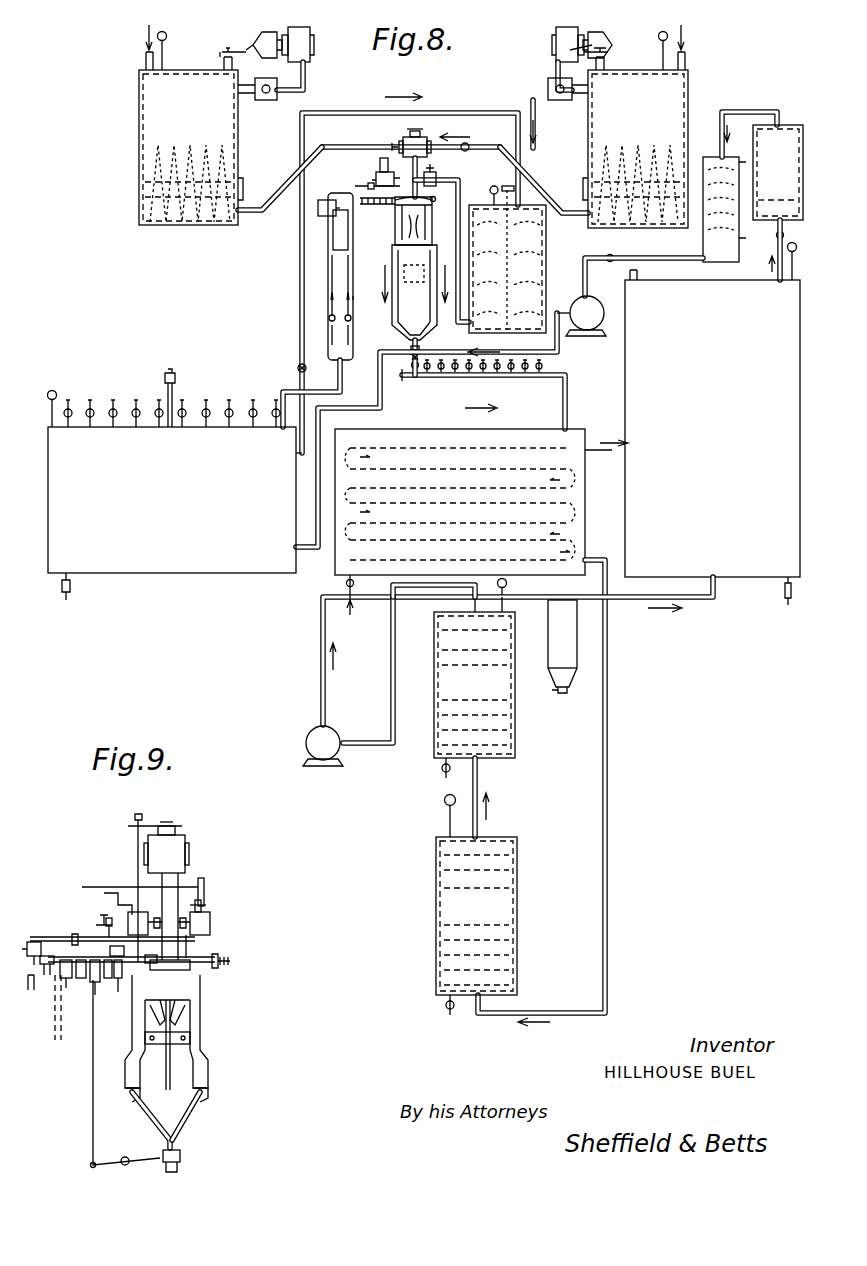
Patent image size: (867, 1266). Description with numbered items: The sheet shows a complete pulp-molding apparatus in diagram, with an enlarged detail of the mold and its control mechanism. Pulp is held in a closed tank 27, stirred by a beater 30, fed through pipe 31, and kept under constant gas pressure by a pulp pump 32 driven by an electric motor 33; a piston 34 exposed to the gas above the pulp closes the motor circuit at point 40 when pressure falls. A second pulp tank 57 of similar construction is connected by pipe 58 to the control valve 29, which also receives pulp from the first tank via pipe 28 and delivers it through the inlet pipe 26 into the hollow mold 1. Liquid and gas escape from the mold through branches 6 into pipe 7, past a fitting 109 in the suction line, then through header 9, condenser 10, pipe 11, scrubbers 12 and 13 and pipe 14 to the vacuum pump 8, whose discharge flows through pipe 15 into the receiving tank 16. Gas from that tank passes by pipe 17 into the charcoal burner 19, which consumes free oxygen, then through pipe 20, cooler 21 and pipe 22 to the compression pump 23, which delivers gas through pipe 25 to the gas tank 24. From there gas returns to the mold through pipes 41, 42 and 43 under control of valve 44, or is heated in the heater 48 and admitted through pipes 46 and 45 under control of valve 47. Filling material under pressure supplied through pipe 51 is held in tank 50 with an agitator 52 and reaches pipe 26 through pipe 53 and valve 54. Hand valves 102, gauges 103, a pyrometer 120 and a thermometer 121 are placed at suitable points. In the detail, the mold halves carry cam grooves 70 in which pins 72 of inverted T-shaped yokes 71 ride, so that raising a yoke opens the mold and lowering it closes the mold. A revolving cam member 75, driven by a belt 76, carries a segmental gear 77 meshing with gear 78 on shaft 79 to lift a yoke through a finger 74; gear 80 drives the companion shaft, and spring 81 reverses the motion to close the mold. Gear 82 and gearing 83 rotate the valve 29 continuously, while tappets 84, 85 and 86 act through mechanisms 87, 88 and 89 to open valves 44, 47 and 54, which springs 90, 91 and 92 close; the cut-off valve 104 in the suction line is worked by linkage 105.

In FIG. 8, the hollow mold 1 is at (425, 228).
In FIG. 8, the branches of the pipe 6 is at (395, 312).
In FIG. 9, the branches of the pipe 6 is at (125, 1092).
In FIG. 8, the pipe 7 is at (420, 350).
In FIG. 8, the vacuum pump 8 is at (305, 740).
In FIG. 8, the header 9 is at (528, 378).
In FIG. 8, the condenser 10 is at (585, 478).
In FIG. 8, the pipe 11 is at (611, 830).
In FIG. 8, the scrubber 12 is at (517, 888).
In FIG. 8, the scrubber 13 is at (515, 727).
In FIG. 8, the pipe 14 is at (398, 720).
In FIG. 8, the pipe 15 is at (527, 603).
In FIG. 8, the receiving tank 16 is at (740, 580).
In FIG. 8, the pipe 17 is at (788, 250).
In FIG. 8, the burner 19 is at (796, 122).
In FIG. 8, the pipe 20 is at (742, 110).
In FIG. 8, the cooler 21 is at (703, 250).
In FIG. 8, the pipe 22 is at (650, 256).
In FIG. 8, the compression pump 23 is at (600, 338).
In FIG. 8, the gas tank 24 is at (220, 575).
In FIG. 8, the pipe 25 is at (380, 408).
In FIG. 8, the pipe 26 is at (440, 165).
In FIG. 8, the closed tank 27 is at (588, 133).
In FIG. 8, the pipe 28 is at (483, 147).
In FIG. 8, the control valve 29 is at (424, 146).
In FIG. 9, the control valve 29 is at (172, 851).
In FIG. 8, the beater or stirrer 30 is at (670, 150).
In FIG. 8, the pipe 31 is at (146, 60).
In FIG. 8, the pulp and material pump 32 is at (300, 27).
In FIG. 8, the electric motor 33 is at (268, 30).
In FIG. 8, the piston 34 is at (222, 59).
In FIG. 8, the contact point 40 is at (249, 48).
In FIG. 8, the pipe 41 is at (310, 392).
In FIG. 8, the pipe 42 is at (302, 252).
In FIG. 9, the pipe 42 is at (122, 893).
In FIG. 8, the pipe 43 is at (394, 146).
In FIG. 8, the valve 44 is at (376, 176).
In FIG. 9, the valve 44 is at (145, 914).
In FIG. 8, the pipe 45 is at (398, 203).
In FIG. 8, the pipe 46 is at (353, 298).
In FIG. 8, the valve 47 is at (318, 208).
In FIG. 9, the valve 47 is at (31, 981).
In FIG. 8, the heater 48 is at (353, 232).
In FIG. 8, the tank 50 is at (546, 265).
In FIG. 8, the pipe 51 is at (538, 150).
In FIG. 8, the agitator 52 is at (511, 179).
In FIG. 8, the pipe 53 is at (443, 199).
In FIG. 8, the valve 54 is at (437, 180).
In FIG. 9, the valve 54 is at (212, 924).
In FIG. 8, the pulp tank 57 is at (139, 190).
In FIG. 8, the pipe 58 is at (294, 175).
In FIG. 9, the cam grooves 70 is at (152, 1025).
In FIG. 9, the yoke 71 is at (166, 1050).
In FIG. 9, the pins 72 is at (192, 1040).
In FIG. 9, the fingers 74 is at (200, 990).
In FIG. 8, the cam member 75 is at (383, 205).
In FIG. 9, the cam member 75 is at (116, 1030).
In FIG. 9, the belt 76 is at (56, 1040).
In FIG. 9, the segmental gear 77 is at (110, 982).
In FIG. 9, the gear member 78 is at (121, 944).
In FIG. 9, the shaft 79 is at (195, 962).
In FIG. 9, the gear member 80 is at (212, 957).
In FIG. 9, the spring 81 is at (228, 962).
In FIG. 9, the gear 82 is at (98, 985).
In FIG. 9, the train of gearing and shafting 83 is at (136, 865).
In FIG. 9, the tappet projection 84 is at (112, 935).
In FIG. 9, the tappet projection 85 is at (68, 980).
In FIG. 9, the tappet projection 86 is at (82, 980).
In FIG. 9, the mechanism 87 is at (104, 924).
In FIG. 9, the mechanism 88 is at (50, 976).
In FIG. 9, the mechanism 89 is at (204, 890).
In FIG. 9, the spring 90 is at (105, 900).
In FIG. 9, the spring 91 is at (36, 940).
In FIG. 9, the spring 92 is at (204, 912).
In FIG. 8, the hand valves 102 is at (299, 365).
In FIG. 8, the gauges 103 is at (56, 392).
In FIG. 9, the automatic cut-off valve 104 is at (180, 1156).
In FIG. 8, the linkage 105 is at (266, 100).
In FIG. 9, the linkage 105 is at (93, 1120).
In FIG. 8, the valve 109 is at (411, 350).
In FIG. 8, the pyrometer 120 is at (364, 184).
In FIG. 9, the pyrometer 120 is at (100, 922).
In FIG. 9, the thermometer 121 is at (192, 940).